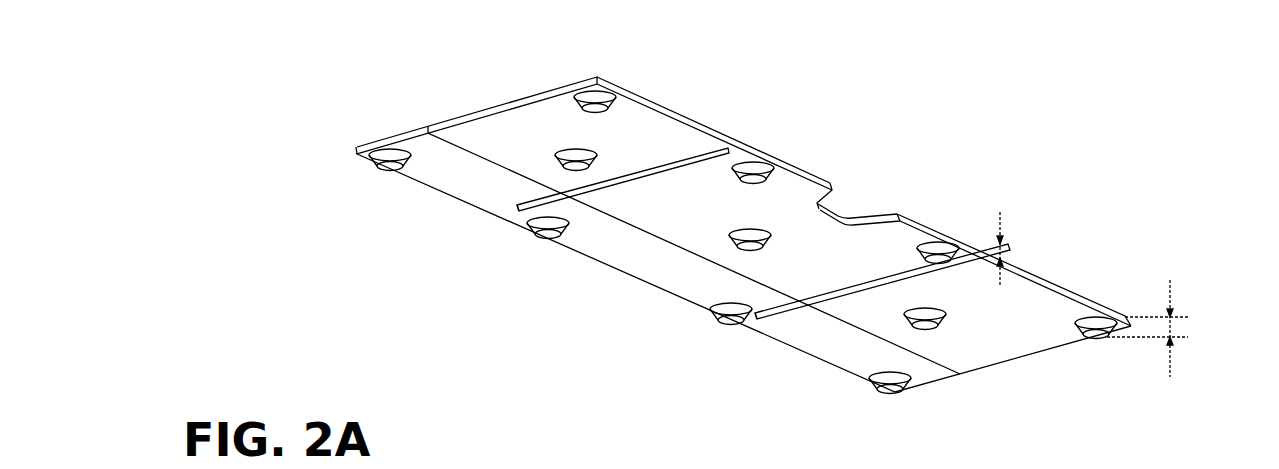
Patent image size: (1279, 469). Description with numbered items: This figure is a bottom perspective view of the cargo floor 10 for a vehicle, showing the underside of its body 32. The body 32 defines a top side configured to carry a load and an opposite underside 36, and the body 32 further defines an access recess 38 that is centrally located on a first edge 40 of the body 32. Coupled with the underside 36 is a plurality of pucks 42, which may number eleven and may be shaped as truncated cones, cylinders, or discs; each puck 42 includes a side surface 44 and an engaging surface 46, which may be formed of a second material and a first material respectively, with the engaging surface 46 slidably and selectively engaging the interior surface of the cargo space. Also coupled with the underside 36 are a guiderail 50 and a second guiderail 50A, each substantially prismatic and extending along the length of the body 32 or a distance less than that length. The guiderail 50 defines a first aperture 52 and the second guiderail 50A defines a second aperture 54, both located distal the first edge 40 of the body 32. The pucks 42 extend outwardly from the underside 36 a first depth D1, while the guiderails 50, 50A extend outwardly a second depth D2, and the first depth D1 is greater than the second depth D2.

The cargo floor 10 is at (1112, 184).
The body 32 is at (515, 122).
The underside 36 is at (820, 268).
The access recess 38 is at (852, 206).
The first edge 40 is at (645, 99).
The puck 42 is at (1100, 333).
The side surface 44 is at (937, 250).
The engaging surface 46 is at (925, 330).
The guiderail 50 is at (723, 147).
The second guiderail 50A is at (866, 283).
The first aperture 52 is at (521, 212).
The second aperture 54 is at (755, 320).
The first depth D1 is at (1172, 293).
The second depth D2 is at (1002, 222).